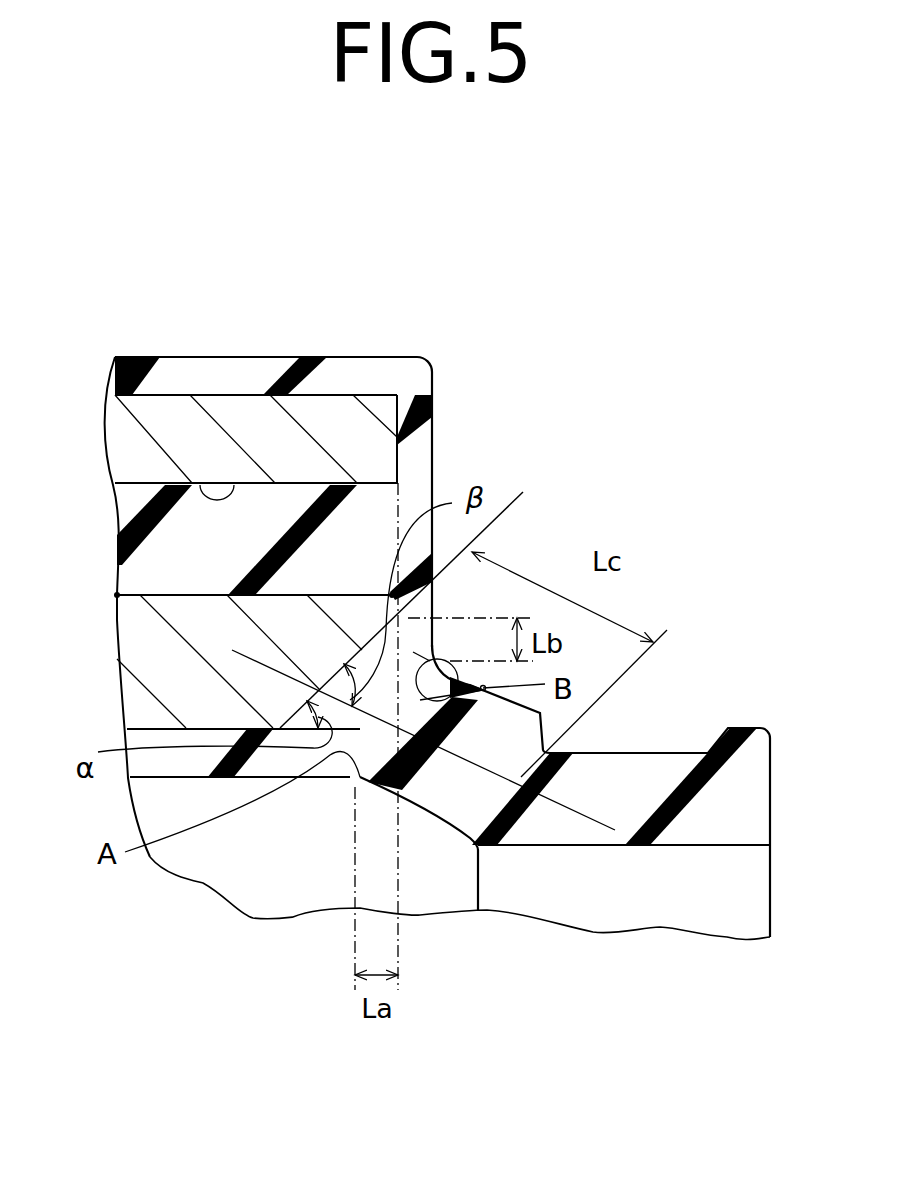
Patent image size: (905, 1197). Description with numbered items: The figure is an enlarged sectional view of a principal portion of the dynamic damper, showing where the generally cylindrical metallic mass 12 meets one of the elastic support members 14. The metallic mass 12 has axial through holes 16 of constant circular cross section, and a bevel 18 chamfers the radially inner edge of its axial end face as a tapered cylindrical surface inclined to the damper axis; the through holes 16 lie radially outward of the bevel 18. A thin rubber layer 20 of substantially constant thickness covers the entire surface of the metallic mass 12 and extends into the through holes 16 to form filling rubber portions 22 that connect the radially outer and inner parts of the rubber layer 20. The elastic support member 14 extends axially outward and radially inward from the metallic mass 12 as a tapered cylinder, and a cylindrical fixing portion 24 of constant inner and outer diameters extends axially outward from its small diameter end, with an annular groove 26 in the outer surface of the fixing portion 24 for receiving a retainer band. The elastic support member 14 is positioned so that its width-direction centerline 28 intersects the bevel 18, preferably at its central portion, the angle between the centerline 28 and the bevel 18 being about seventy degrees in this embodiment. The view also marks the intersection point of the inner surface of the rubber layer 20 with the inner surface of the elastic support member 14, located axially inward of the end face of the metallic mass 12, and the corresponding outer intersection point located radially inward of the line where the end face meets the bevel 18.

The metallic mass 12 is at (325, 412).
The elastic support member 14 is at (433, 800).
The through hole 16 is at (233, 480).
The bevel 18 is at (343, 668).
The rubber layer 20 is at (412, 402).
The filling rubber portion 22 is at (160, 550).
The cylindrical fixing portion 24 is at (642, 805).
The annular groove 26 is at (697, 752).
The centerline 28 is at (587, 813).